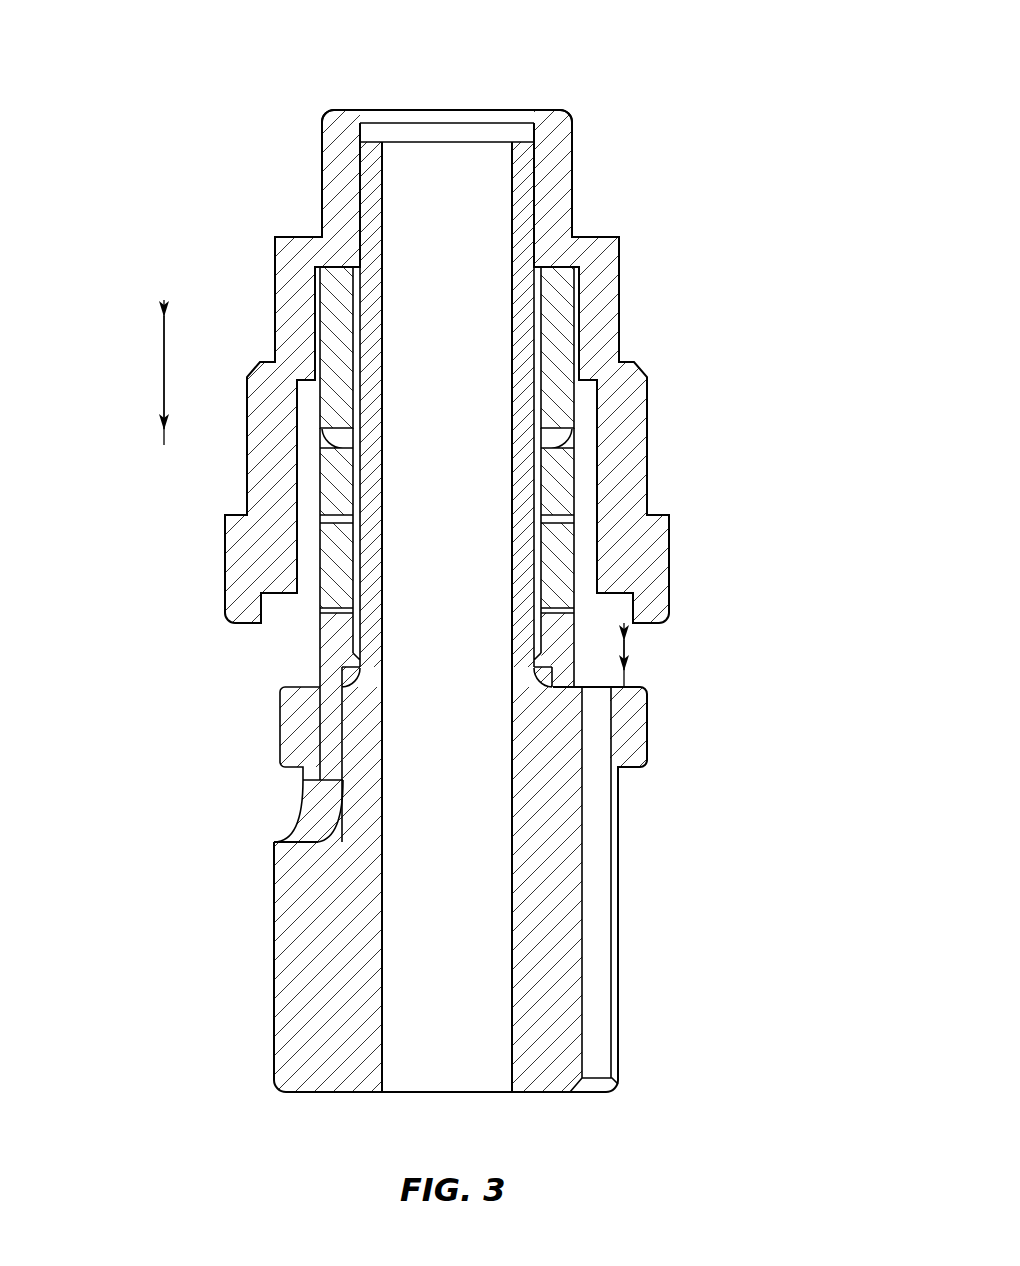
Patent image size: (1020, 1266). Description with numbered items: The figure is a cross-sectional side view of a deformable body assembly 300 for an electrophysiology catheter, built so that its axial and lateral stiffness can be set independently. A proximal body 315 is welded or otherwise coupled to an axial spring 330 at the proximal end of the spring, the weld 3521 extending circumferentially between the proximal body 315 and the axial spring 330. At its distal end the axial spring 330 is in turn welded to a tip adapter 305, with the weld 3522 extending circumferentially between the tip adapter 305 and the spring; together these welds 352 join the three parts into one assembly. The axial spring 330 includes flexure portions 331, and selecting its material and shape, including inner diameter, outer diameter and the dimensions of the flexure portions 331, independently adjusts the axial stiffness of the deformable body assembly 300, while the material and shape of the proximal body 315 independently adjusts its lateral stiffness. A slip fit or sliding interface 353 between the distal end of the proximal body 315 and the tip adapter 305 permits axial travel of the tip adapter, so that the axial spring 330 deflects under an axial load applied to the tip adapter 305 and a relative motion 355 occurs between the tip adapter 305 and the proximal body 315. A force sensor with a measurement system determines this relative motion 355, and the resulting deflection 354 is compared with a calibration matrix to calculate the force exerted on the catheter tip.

The deformable body assembly 300 is at (640, 57).
The tip adapter 305 is at (291, 166).
The proximal body 315 is at (631, 867).
The axial spring 330 is at (555, 390).
The flexure portions 331 is at (580, 436).
The weld 352 is at (453, 554).
The weld 3521 is at (339, 746).
The weld 3522 is at (579, 319).
The slip fit/sliding interface 353 is at (536, 177).
The deflection 354 is at (628, 652).
The relative motion 355 is at (163, 372).